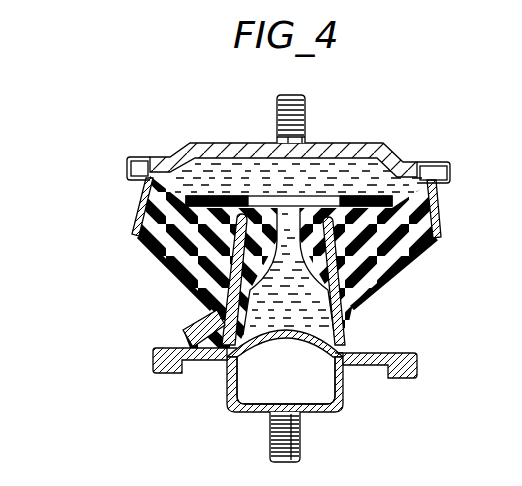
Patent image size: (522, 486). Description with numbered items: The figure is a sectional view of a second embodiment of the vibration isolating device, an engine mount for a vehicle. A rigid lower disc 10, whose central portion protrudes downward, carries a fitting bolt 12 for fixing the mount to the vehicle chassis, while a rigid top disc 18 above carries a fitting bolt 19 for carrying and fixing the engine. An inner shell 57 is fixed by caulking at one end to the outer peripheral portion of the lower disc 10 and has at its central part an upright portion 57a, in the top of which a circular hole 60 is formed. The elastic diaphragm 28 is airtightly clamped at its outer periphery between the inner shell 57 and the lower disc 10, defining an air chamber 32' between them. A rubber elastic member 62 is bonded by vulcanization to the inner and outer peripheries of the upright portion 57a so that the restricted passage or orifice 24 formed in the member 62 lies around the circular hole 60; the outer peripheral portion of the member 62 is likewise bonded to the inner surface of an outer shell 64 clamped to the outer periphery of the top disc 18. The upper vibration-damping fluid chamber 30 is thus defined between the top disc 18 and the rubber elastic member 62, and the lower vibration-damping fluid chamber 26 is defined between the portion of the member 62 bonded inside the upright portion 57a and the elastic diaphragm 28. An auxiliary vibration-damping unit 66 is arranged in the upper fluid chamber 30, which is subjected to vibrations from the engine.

The lower disc 10 is at (343, 408).
The fitting bolt 12 is at (300, 440).
The top disc 18 is at (365, 143).
The fitting bolt 19 is at (303, 118).
The restricted passage 24 is at (223, 277).
The lower vibration-damping fluid chamber 26 is at (212, 310).
The elastic diaphragm 28 is at (262, 350).
The upper vibration-damping fluid chamber 30 is at (225, 178).
The air chamber 32' is at (267, 406).
The inner shell 57 is at (385, 348).
The upright portion 57a is at (212, 297).
The circular hole 60 is at (347, 265).
The rubber elastic member 62 is at (403, 245).
The outer shell 64 is at (135, 208).
The auxiliary vibration-damping unit 66 is at (433, 203).